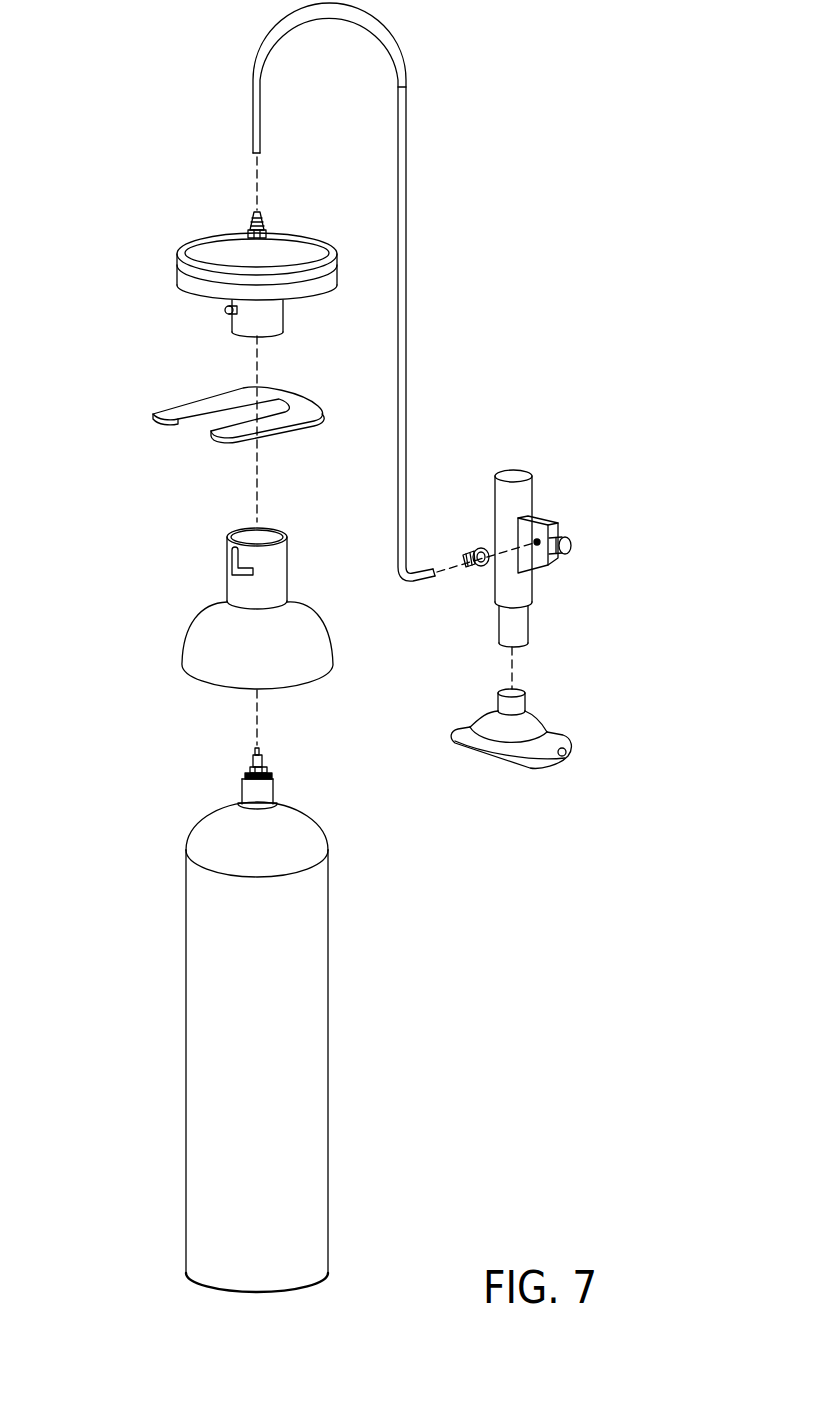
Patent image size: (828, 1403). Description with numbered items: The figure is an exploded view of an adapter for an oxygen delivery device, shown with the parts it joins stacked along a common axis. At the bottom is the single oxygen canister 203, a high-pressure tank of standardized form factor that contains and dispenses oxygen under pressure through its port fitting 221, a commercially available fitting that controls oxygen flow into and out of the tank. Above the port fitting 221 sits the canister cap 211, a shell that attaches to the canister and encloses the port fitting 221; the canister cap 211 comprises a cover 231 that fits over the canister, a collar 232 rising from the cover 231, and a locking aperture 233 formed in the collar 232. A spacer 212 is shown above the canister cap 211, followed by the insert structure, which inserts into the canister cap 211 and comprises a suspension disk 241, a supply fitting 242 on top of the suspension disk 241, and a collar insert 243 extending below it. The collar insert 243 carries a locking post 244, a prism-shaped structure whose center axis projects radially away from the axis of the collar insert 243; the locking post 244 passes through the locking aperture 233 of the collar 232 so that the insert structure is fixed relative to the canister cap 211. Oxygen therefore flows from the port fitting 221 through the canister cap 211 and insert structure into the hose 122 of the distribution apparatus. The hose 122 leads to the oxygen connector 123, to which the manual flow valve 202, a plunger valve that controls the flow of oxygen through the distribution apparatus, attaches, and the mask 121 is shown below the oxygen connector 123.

The hose 122 is at (407, 247).
The oxygen connector 123 is at (528, 497).
The manual flow valve 202 is at (572, 548).
The mask 121 is at (530, 702).
The single oxygen canister 203 is at (330, 1097).
The port fitting 221 is at (277, 775).
The canister cap 211 is at (261, 625).
The cover 231 is at (312, 665).
The collar 232 is at (289, 574).
The locking aperture 233 is at (227, 573).
The spacer 212 is at (165, 425).
The suspension disk 241 is at (193, 267).
The supply fitting 242 is at (256, 214).
The collar insert 243 is at (282, 332).
The locking post 244 is at (228, 309).